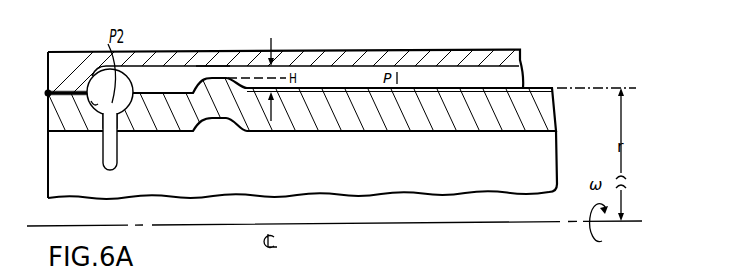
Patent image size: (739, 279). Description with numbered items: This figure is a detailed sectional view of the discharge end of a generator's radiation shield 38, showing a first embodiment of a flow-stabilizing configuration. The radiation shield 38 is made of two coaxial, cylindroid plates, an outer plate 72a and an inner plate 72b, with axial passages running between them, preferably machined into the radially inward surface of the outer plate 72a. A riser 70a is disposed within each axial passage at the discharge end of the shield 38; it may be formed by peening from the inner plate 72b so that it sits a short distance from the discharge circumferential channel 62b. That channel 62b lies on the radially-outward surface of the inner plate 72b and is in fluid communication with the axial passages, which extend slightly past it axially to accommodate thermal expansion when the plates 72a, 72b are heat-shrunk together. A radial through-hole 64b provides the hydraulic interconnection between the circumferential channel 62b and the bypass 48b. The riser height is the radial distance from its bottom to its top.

The outer plate 72a is at (412, 47).
The inner plate 72b is at (367, 135).
The riser 70a is at (211, 66).
The radiation shield 38 is at (589, 144).
The discharge circumferential channel 62b is at (98, 118).
The radial through-hole 64b is at (120, 128).
The bypass 48b is at (118, 163).